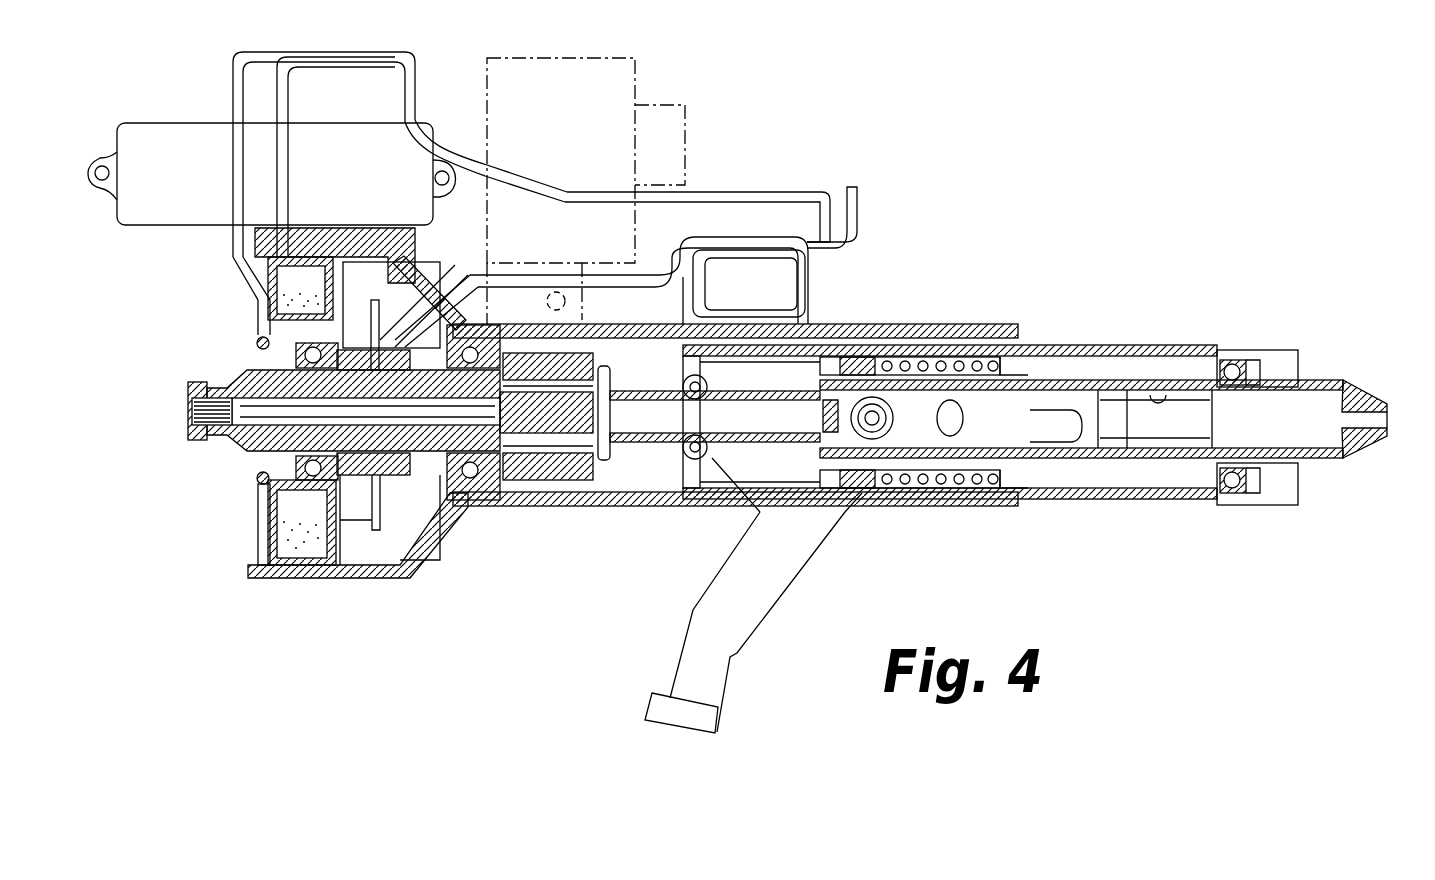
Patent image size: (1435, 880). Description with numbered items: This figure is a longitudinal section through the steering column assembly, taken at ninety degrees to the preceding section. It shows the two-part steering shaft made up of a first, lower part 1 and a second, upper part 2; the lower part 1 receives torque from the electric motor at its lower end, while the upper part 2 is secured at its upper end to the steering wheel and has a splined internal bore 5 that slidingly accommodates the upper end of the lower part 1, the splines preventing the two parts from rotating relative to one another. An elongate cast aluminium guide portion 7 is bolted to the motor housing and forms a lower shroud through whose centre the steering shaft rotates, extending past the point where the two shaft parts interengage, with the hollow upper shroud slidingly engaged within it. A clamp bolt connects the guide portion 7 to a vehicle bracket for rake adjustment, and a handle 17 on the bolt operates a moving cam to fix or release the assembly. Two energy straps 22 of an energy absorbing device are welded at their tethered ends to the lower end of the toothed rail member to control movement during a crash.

The first, lower part of the steering shaft 1 is at (565, 484).
The second, upper part of the steering shaft 2 is at (1163, 463).
The splined internal bore 5 is at (1165, 393).
The guide portion 7 is at (663, 495).
The handle 17 is at (1230, 366).
The energy straps 22 is at (705, 366).